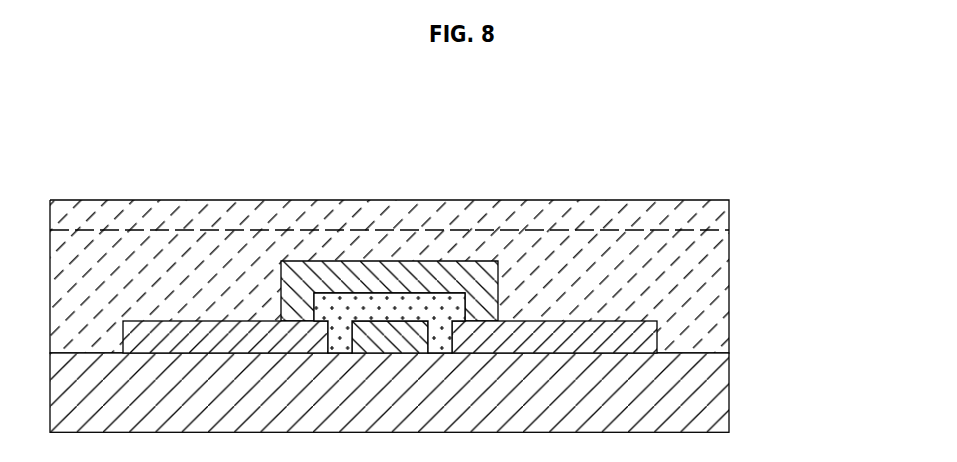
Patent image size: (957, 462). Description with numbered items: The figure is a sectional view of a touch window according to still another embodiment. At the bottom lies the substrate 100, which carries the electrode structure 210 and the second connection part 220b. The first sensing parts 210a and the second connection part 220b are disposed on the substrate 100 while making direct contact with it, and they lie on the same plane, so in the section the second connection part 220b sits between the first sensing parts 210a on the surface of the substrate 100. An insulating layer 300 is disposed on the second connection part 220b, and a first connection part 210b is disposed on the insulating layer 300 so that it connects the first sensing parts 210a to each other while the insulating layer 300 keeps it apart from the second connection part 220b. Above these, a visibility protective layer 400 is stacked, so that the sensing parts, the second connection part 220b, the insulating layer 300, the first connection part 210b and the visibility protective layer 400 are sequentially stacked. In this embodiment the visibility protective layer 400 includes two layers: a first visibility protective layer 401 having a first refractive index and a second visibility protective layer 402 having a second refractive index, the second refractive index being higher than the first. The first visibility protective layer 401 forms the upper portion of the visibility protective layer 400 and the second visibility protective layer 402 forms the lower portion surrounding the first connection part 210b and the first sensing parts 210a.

The substrate 100 is at (725, 395).
The first sensing electrode 210 is at (390, 230).
The first sensing part 210a is at (571, 325).
The first connection part 210b is at (473, 268).
The second connection part 220b is at (390, 330).
The insulating layer 300 is at (332, 298).
The visibility protective layer 400 is at (464, 276).
The first visibility protective layer 401 is at (725, 216).
The second visibility protective layer 402 is at (725, 298).